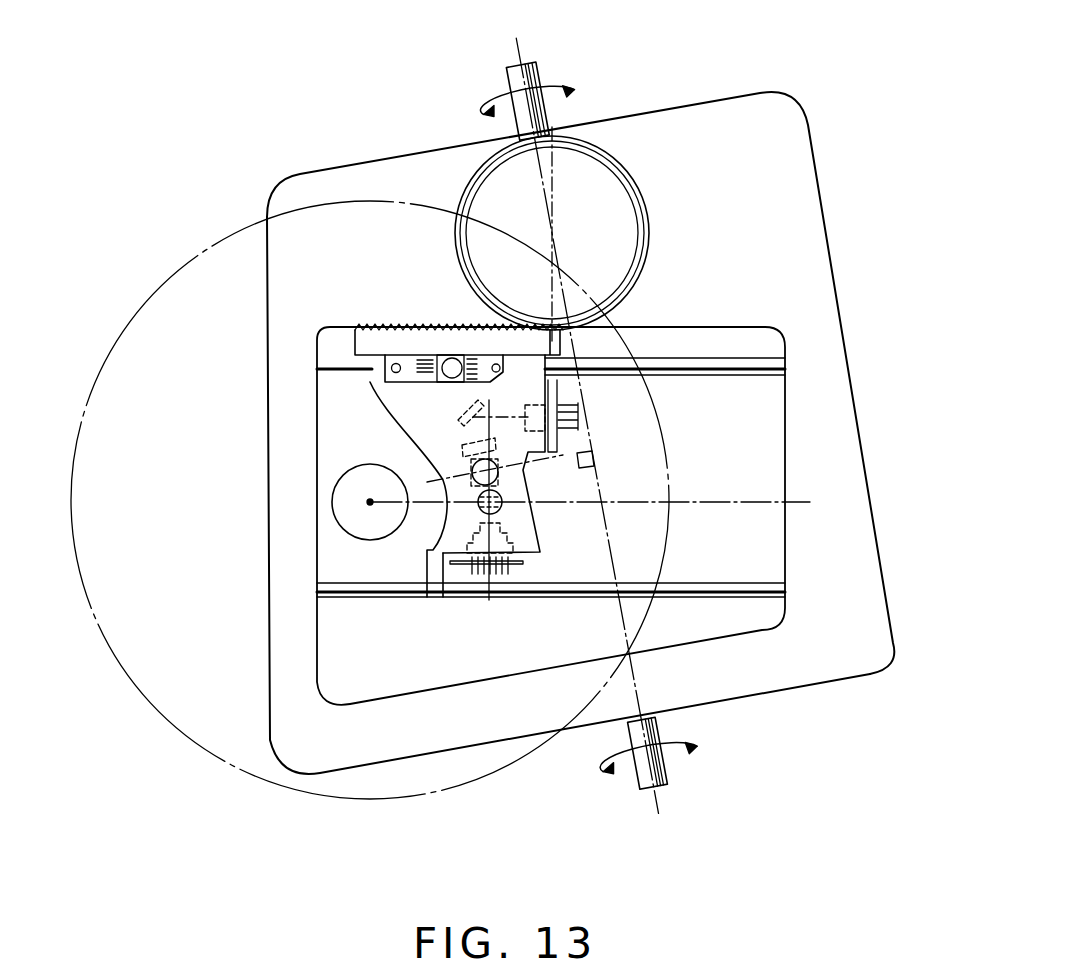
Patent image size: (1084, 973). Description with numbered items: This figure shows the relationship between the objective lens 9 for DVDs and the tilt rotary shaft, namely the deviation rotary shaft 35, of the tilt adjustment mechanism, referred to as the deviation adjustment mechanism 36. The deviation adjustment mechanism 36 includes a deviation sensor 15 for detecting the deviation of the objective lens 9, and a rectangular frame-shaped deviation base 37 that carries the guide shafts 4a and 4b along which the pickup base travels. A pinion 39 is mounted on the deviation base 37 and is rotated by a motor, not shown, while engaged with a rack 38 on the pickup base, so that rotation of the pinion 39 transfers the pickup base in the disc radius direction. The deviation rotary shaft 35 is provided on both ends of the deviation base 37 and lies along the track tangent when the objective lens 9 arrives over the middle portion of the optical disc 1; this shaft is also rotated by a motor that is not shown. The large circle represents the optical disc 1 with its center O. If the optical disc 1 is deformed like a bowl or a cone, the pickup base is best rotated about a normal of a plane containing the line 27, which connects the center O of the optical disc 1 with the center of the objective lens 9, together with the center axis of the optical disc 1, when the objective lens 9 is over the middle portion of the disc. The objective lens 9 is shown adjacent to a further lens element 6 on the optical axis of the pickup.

The optical disc 1 is at (178, 734).
The guide shaft 4a is at (724, 362).
The guide shaft 4b is at (740, 590).
The objective lens 6 is at (503, 505).
The objective lens 9 is at (470, 459).
The deviation sensor 15 is at (452, 355).
The line 27 is at (566, 456).
The deviation rotary shaft 35 is at (535, 61).
The deviation adjustment mechanism 36 is at (816, 686).
The deviation base 37 is at (447, 754).
The rack 38 is at (400, 338).
The pinion 39 is at (648, 203).
The center of the optical disc O is at (368, 504).